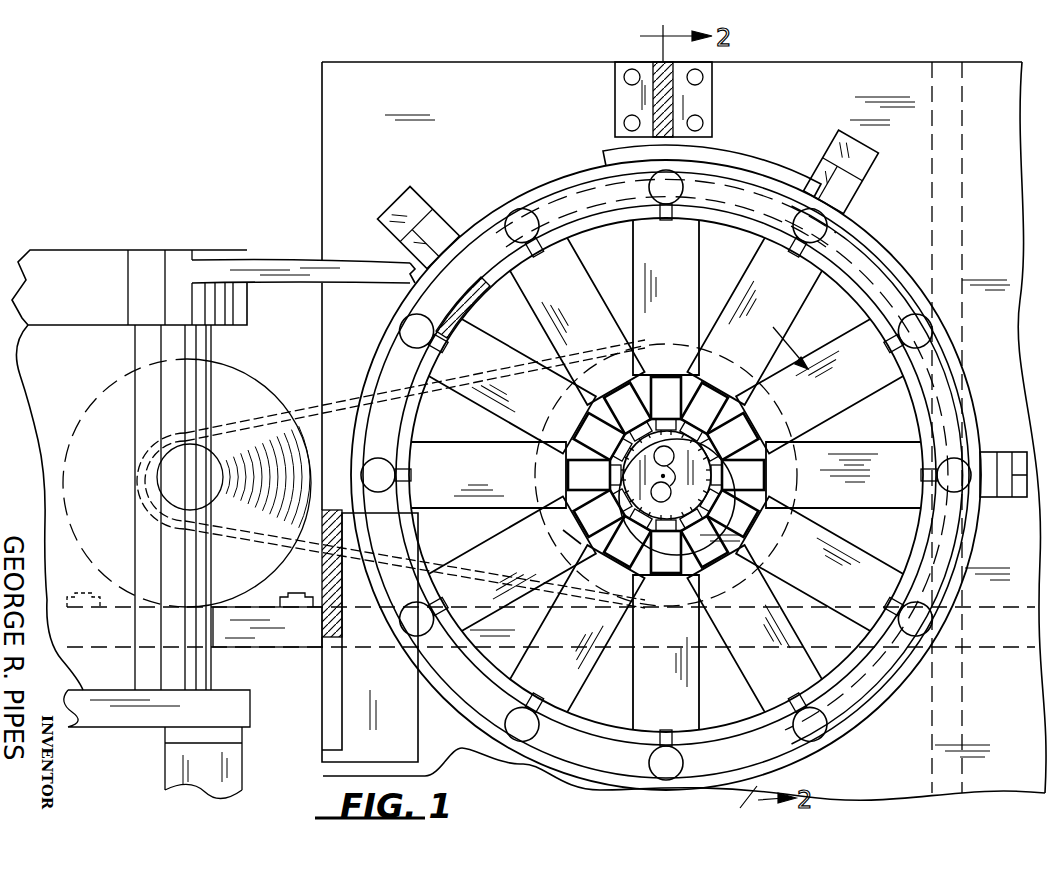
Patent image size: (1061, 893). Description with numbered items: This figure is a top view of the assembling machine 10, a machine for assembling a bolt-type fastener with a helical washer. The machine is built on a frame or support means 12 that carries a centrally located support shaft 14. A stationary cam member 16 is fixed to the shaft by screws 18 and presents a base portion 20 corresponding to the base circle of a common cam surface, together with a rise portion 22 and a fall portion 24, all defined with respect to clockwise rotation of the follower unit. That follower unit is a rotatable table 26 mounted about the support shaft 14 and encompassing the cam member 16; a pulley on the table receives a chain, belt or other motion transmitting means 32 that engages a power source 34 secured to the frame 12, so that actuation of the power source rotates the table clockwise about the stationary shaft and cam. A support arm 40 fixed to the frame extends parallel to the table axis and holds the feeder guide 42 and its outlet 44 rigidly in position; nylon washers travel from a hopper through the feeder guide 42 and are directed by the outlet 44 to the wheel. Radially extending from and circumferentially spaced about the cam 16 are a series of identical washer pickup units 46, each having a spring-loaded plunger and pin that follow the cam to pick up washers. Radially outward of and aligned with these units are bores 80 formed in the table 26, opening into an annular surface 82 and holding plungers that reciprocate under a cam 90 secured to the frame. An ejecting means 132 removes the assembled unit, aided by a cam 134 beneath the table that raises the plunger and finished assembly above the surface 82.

The assembling machine 10 is at (226, 219).
The frame or support means 12 is at (531, 431).
The support shaft 14 is at (702, 410).
The stationary cam member 16 is at (671, 533).
The screws 18 is at (674, 477).
The base portion 20 is at (593, 408).
The rise portion 22 is at (754, 483).
The fall portion 24 is at (590, 545).
The rotatable table 26 is at (900, 417).
The chain, belt or motion transmitting means 32 is at (308, 410).
The power source 34 is at (187, 483).
The support arm 40 is at (615, 100).
The feeder guide 42 is at (357, 264).
The outlet 44 is at (452, 300).
The washer pickup units 46 is at (647, 257).
The bores 80 is at (649, 762).
The annular surface 82 is at (560, 210).
The cam 90 is at (936, 300).
The ejecting means 132 is at (434, 522).
The cam 134 is at (389, 637).